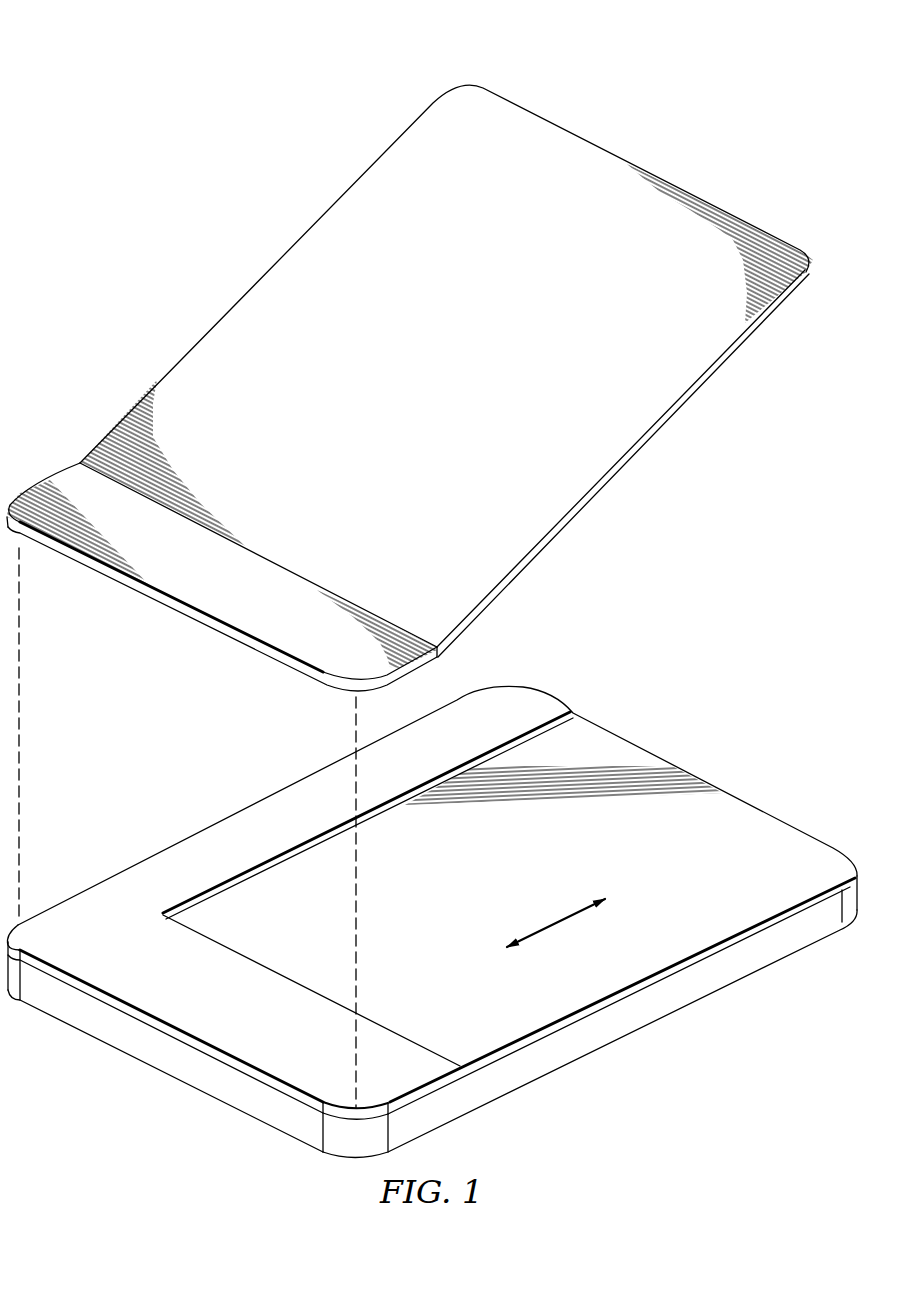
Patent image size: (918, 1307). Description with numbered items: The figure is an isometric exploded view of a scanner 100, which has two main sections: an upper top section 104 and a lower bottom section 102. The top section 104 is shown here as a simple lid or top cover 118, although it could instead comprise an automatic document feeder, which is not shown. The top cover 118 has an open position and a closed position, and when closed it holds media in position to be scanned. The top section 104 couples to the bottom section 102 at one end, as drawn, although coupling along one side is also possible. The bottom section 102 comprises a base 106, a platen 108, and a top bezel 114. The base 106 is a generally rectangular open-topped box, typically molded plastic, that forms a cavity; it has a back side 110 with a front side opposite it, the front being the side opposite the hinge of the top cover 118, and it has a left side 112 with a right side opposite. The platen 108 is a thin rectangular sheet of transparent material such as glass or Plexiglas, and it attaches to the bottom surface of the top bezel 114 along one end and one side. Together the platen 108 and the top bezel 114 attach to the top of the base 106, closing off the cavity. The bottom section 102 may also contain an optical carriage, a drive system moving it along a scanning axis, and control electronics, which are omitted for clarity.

The scanner 100 is at (142, 63).
The bottom section 102 is at (683, 693).
The top section 104 is at (220, 300).
The base 106 is at (505, 1095).
The platen 108 is at (735, 813).
The back side 110 is at (117, 1025).
The left side 112 is at (632, 1007).
The top bezel 114 is at (287, 803).
The top cover 118 is at (603, 482).